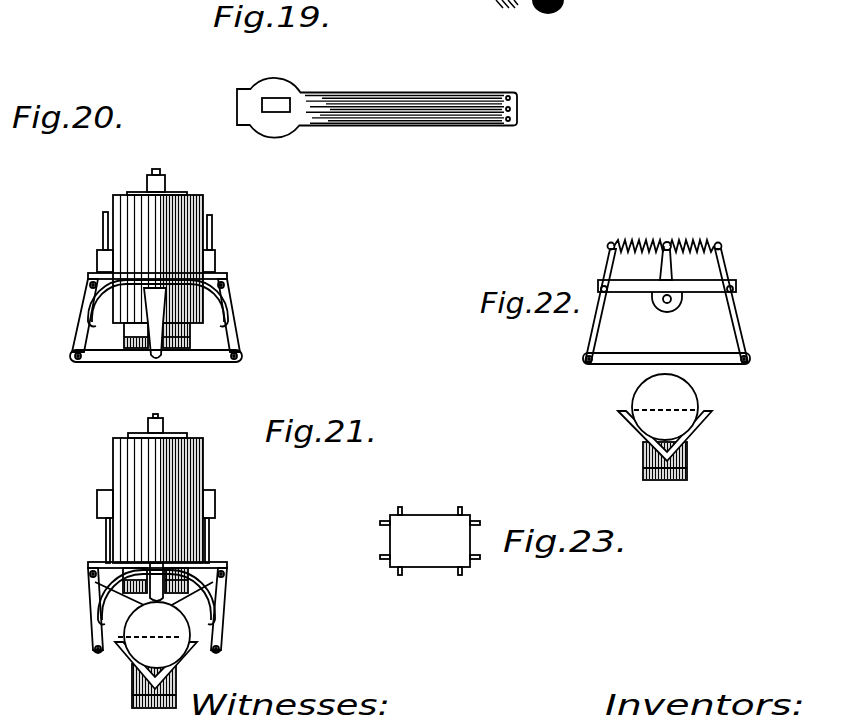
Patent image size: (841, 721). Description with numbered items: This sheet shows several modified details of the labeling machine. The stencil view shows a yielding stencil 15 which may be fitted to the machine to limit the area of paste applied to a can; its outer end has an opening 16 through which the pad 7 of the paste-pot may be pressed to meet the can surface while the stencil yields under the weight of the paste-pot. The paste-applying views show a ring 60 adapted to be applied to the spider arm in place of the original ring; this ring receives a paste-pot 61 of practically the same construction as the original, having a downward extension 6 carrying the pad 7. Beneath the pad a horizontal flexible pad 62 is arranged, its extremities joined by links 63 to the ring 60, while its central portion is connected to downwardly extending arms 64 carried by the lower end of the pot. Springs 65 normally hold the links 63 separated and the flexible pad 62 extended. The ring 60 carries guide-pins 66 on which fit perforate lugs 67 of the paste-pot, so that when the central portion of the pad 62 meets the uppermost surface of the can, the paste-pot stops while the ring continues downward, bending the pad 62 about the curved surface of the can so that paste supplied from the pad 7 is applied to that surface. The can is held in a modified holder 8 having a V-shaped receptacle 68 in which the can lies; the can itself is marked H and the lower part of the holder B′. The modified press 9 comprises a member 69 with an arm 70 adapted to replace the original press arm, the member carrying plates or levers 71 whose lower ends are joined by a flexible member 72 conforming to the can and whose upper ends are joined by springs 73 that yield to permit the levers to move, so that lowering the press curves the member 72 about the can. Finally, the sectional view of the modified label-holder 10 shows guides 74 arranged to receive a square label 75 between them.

In FIG. 19, the yielding stencil 15 is at (385, 107).
In FIG. 19, the stencil opening 16 is at (276, 100).
In FIG. 20, the pad 7 is at (189, 280).
In FIG. 21, the pad 7 is at (132, 510).
In FIG. 20, the paste-pot 61 is at (187, 215).
In FIG. 21, the paste-pot 61 is at (185, 478).
In FIG. 20, the guide-pins 66 is at (207, 228).
In FIG. 21, the guide-pins 66 is at (107, 526).
In FIG. 20, the perforate lugs 67 is at (207, 255).
In FIG. 21, the perforate lugs 67 is at (100, 505).
In FIG. 20, the ring 60 is at (227, 276).
In FIG. 21, the ring 60 is at (215, 565).
In FIG. 20, the links 63 is at (78, 333).
In FIG. 21, the links 63 is at (90, 619).
In FIG. 20, the flexible pad 62 is at (207, 358).
In FIG. 21, the flexible pad 62 is at (115, 641).
In FIG. 20, the springs 65 is at (205, 290).
In FIG. 21, the springs 65 is at (156, 602).
In FIG. 20, the downwardly extending arms 64 is at (156, 338).
In FIG. 21, the downwardly extending arms 64 is at (157, 566).
In FIG. 20, the downward extension 6 is at (188, 336).
In FIG. 21, the downward extension 6 is at (110, 563).
In FIG. 21, the V-shaped receptacle 68 is at (128, 658).
In FIG. 21, the can-holder 8 is at (178, 684).
In FIG. 22, the can-holder 8 is at (678, 436).
In FIG. 21, the stem base B′ is at (131, 704).
In FIG. 22, the stem base B′ is at (688, 473).
In FIG. 21, the ball H is at (154, 635).
In FIG. 22, the ball H is at (648, 393).
In FIG. 22, the press 9 is at (653, 279).
In FIG. 22, the plates or levers 71 is at (586, 340).
In FIG. 22, the press member 69 is at (735, 282).
In FIG. 22, the flexible member 72 is at (681, 359).
In FIG. 22, the arm 70 is at (664, 303).
In FIG. 22, the springs 73 is at (642, 245).
In FIG. 23, the label-holder 10 is at (445, 528).
In FIG. 23, the square label 75 is at (430, 541).
In FIG. 23, the guides 74 is at (478, 522).